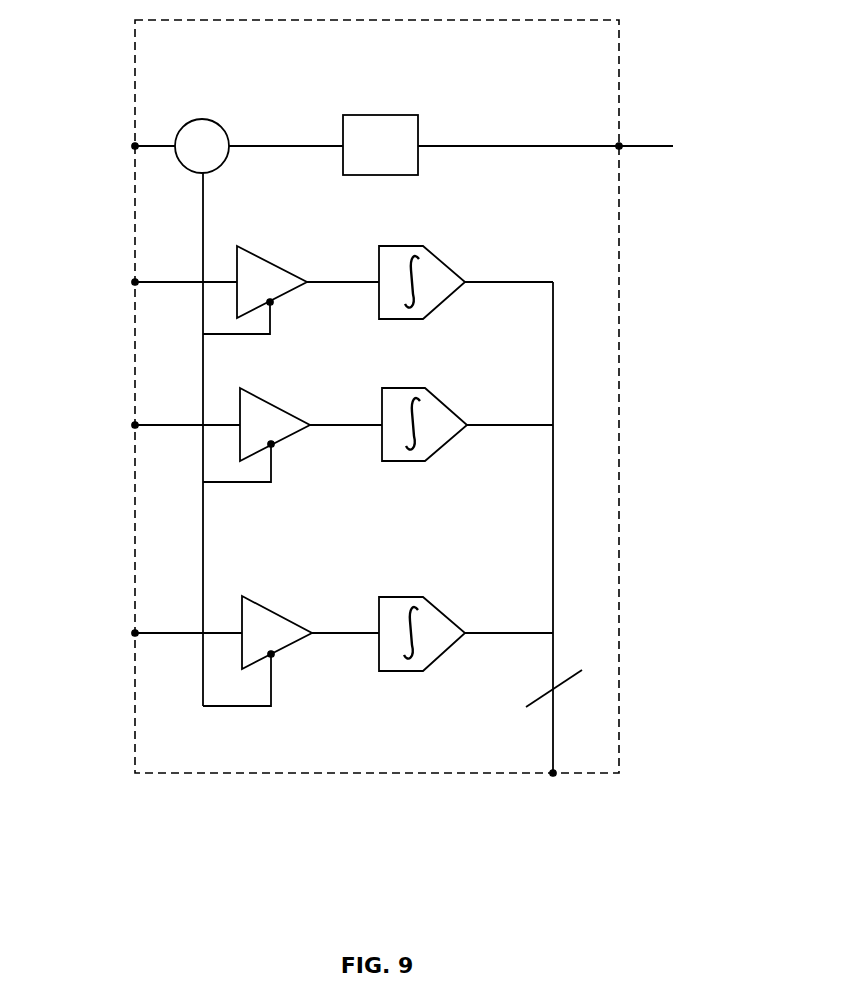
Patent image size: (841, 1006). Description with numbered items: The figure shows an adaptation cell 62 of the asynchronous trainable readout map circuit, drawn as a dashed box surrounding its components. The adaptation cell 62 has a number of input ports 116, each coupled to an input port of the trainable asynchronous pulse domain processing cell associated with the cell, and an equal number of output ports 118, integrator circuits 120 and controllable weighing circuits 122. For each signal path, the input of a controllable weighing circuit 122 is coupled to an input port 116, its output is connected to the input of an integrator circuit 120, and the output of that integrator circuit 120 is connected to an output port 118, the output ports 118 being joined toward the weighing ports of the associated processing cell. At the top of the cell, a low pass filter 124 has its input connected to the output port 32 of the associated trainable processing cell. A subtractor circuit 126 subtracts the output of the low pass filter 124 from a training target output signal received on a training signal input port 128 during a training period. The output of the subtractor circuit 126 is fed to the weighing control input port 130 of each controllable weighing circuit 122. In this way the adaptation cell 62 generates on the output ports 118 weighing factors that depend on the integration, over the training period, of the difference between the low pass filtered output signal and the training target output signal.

The output port 32 is at (673, 140).
The adaptation cell 62 is at (620, 62).
The input ports 116 is at (135, 282).
The output ports 118 is at (550, 777).
The integrator circuits 120 is at (449, 269).
The controllable weighing circuits 122 is at (283, 269).
The low pass filter 124 is at (395, 115).
The subtractor circuit 126 is at (220, 126).
The training signal input port 128 is at (135, 146).
The weighing control input port 130 is at (222, 167).